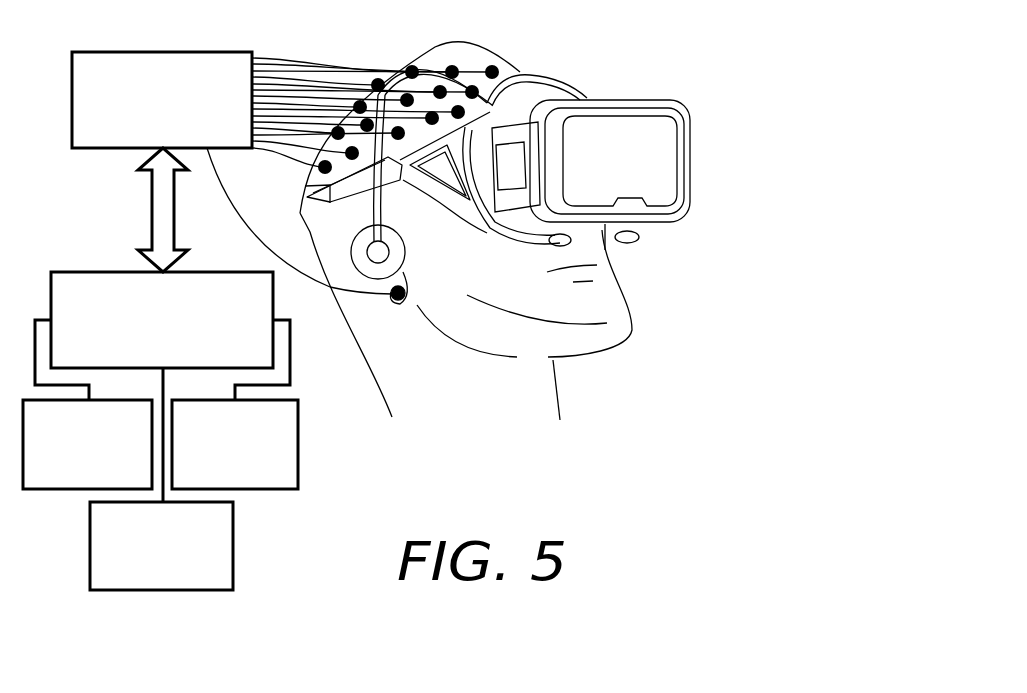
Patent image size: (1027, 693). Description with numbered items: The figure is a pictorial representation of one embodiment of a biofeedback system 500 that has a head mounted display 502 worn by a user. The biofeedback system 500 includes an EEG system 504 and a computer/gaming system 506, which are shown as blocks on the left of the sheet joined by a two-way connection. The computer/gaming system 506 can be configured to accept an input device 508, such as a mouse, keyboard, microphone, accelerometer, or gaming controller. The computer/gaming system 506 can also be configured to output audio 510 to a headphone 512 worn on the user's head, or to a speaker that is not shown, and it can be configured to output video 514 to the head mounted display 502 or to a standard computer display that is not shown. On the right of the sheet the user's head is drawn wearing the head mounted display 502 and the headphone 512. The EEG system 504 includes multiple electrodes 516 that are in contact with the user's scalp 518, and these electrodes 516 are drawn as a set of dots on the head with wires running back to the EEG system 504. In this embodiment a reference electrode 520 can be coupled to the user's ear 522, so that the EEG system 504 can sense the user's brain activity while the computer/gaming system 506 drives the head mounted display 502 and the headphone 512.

The biofeedback system 500 is at (770, 96).
The head mounted display 502 is at (603, 108).
The EEG system 504 is at (180, 125).
The computer/gaming system 506 is at (180, 356).
The input device 508 is at (108, 481).
The audio output 510 is at (253, 481).
The headphone 512 is at (405, 250).
The video output 514 is at (180, 568).
The electrodes 516 is at (492, 65).
The user's scalp 518 is at (360, 223).
The reference electrode 520 is at (398, 301).
The user's ear 522 is at (405, 277).